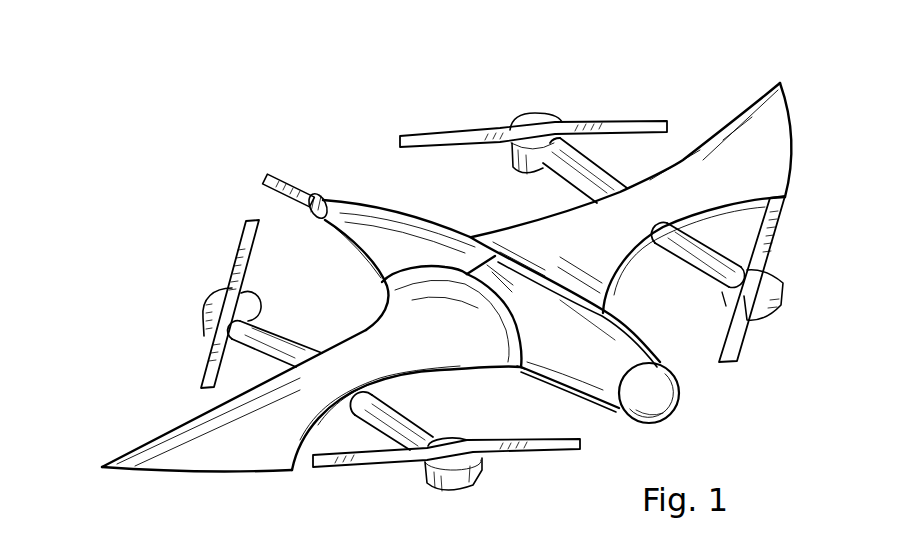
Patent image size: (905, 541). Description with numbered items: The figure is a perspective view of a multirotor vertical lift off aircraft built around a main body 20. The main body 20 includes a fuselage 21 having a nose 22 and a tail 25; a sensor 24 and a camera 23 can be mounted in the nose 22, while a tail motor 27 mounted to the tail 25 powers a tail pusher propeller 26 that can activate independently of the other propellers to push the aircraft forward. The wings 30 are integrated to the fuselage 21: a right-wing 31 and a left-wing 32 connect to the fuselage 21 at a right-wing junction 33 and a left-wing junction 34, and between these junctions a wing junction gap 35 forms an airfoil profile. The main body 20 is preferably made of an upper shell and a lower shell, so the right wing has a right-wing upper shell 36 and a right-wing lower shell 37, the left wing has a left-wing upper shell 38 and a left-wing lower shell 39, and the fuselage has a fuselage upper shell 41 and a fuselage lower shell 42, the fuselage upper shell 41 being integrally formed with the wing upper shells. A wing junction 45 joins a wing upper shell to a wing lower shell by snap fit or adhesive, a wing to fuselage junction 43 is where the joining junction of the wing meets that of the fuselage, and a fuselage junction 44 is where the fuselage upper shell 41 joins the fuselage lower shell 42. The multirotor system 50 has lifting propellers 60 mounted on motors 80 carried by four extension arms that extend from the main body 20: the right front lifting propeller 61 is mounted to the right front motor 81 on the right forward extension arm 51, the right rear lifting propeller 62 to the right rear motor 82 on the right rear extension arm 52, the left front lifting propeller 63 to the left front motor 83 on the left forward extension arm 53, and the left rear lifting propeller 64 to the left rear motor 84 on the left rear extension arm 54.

The main body 20 is at (258, 72).
The fuselage 21 is at (575, 397).
The nose 22 is at (672, 417).
The camera 23 is at (652, 414).
The sensor 24 is at (678, 398).
The tail 25 is at (338, 207).
The tail pusher propeller 26 is at (281, 178).
The tail motor 27 is at (318, 193).
The wings 30 is at (135, 445).
The right-wing 31 is at (210, 468).
The left-wing 32 is at (748, 116).
The right-wing junction 33 is at (490, 305).
The left-wing junction 34 is at (562, 252).
The wing junction gap 35 is at (485, 263).
The right-wing upper shell 36 is at (363, 333).
The right-wing lower shell 37 is at (243, 488).
The left-wing upper shell 38 is at (763, 202).
The left-wing lower shell 39 is at (808, 160).
The fuselage upper shell 41 is at (630, 338).
The fuselage lower shell 42 is at (597, 405).
The wing to fuselage junction 43 is at (513, 370).
The fuselage junction 44 is at (560, 388).
The wing junction 45 is at (443, 380).
The multirotor system 50 is at (561, 99).
The right forward extension arm 51 is at (380, 419).
The right rear extension arm 52 is at (247, 343).
The left forward extension arm 53 is at (684, 255).
The left rear extension arm 54 is at (566, 176).
The lifting propellers 60 is at (187, 373).
The right front lifting propeller 61 is at (533, 453).
The right rear lifting propeller 62 is at (250, 238).
The left front lifting propeller 63 is at (773, 253).
The left rear lifting propeller 64 is at (433, 136).
The motors 80 is at (416, 498).
The right front motor 81 is at (447, 487).
The right rear motor 82 is at (218, 297).
The left front motor 83 is at (767, 310).
The left rear motor 84 is at (535, 172).